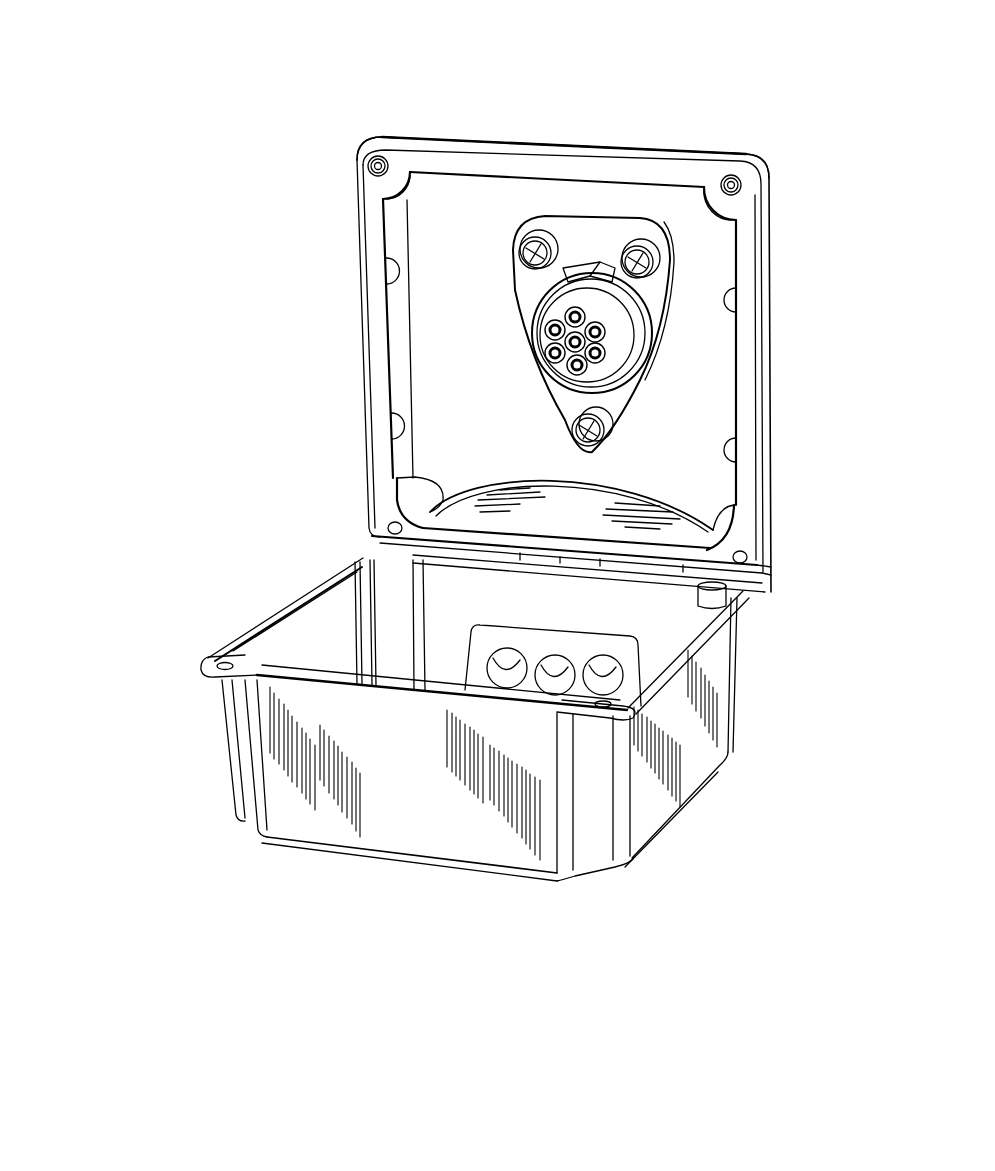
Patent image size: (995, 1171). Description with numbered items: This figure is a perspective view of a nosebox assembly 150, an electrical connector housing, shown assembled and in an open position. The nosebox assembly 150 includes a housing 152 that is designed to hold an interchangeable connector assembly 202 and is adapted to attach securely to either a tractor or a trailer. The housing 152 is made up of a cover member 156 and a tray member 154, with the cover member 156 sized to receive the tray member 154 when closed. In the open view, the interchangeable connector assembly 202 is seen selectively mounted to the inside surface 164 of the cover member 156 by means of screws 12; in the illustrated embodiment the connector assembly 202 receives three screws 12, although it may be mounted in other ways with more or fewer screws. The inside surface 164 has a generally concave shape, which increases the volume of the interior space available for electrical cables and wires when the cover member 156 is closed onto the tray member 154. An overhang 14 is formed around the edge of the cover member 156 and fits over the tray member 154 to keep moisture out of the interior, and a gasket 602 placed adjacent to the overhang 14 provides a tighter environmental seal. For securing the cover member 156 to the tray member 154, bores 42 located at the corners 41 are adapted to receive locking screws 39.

The nosebox assembly 150 is at (160, 109).
The housing 152 is at (136, 208).
The tray member 154 is at (268, 618).
The cover member 156 is at (368, 398).
The overhang 14 is at (415, 146).
The gasket 602 is at (478, 162).
The inside surface 164 is at (510, 215).
The corners 41 is at (375, 140).
The locking screws 39 is at (372, 170).
The bores 42 is at (372, 162).
The interchangeable connector assembly 202 is at (488, 315).
The screws 12 is at (540, 240).